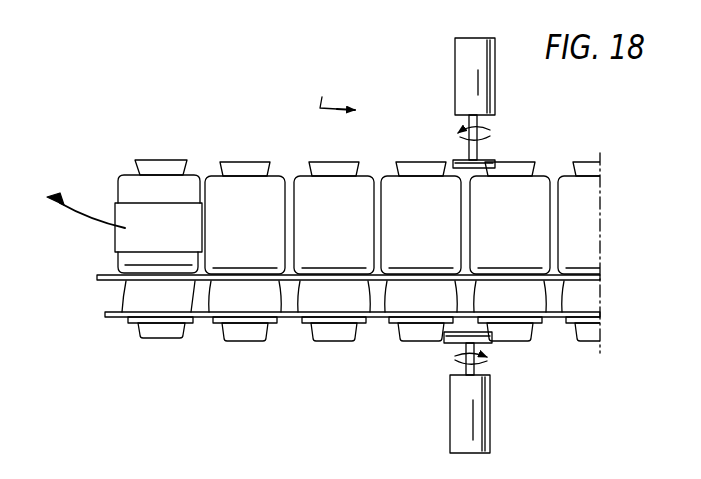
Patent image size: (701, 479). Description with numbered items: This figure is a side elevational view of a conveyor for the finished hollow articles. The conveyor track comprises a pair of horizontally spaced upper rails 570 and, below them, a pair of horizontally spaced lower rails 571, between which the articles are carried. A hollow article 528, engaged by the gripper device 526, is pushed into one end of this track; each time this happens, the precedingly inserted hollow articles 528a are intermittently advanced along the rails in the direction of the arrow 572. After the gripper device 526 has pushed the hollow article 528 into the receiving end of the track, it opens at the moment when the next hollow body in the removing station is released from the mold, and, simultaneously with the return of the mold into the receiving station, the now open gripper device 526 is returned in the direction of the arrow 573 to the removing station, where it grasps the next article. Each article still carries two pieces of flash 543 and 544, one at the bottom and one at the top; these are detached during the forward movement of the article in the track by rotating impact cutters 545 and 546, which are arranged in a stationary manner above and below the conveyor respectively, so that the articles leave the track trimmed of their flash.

The gripper device 526 is at (143, 249).
The hollow article 528 is at (150, 182).
The precedingly inserted hollow articles 528a is at (278, 197).
The piece of flash 543 is at (167, 333).
The piece of flash 544 is at (178, 167).
The rotating impact cutter 545 is at (455, 160).
The rotating impact cutter 546 is at (490, 340).
The upper rails 570 is at (104, 277).
The lower rails 571 is at (108, 313).
The arrow 572 is at (332, 88).
The arrow 573 is at (77, 210).